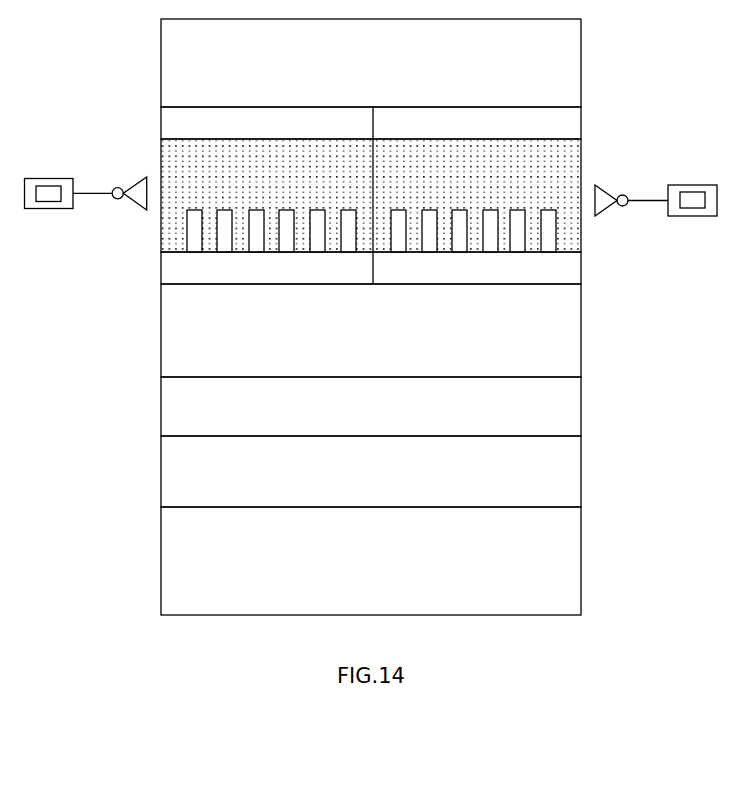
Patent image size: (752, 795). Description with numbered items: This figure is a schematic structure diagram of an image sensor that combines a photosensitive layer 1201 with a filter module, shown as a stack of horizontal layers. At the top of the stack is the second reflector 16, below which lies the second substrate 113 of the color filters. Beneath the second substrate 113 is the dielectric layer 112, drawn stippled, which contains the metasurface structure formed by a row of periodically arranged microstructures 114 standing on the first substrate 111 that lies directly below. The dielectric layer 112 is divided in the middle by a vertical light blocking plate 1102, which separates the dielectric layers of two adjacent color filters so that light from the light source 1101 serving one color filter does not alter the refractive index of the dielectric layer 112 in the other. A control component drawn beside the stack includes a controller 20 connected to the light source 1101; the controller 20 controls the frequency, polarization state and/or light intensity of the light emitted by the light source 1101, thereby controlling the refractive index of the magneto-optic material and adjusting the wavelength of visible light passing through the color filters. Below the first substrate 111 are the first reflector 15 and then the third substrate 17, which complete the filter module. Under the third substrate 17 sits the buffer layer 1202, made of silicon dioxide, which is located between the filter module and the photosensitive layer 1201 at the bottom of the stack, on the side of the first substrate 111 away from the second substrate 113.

The second reflector 16 is at (578, 45).
The second substrate 113 is at (173, 122).
The dielectric layer 112 is at (179, 149).
The microstructures 114 is at (181, 234).
The first substrate 111 is at (176, 265).
The light blocking plate 1102 is at (379, 159).
The light source 1101 is at (609, 200).
The controller 20 is at (697, 203).
The first reflector 15 is at (578, 341).
The third substrate 17 is at (578, 414).
The buffer layer 1202 is at (578, 478).
The photosensitive layer 1201 is at (578, 575).